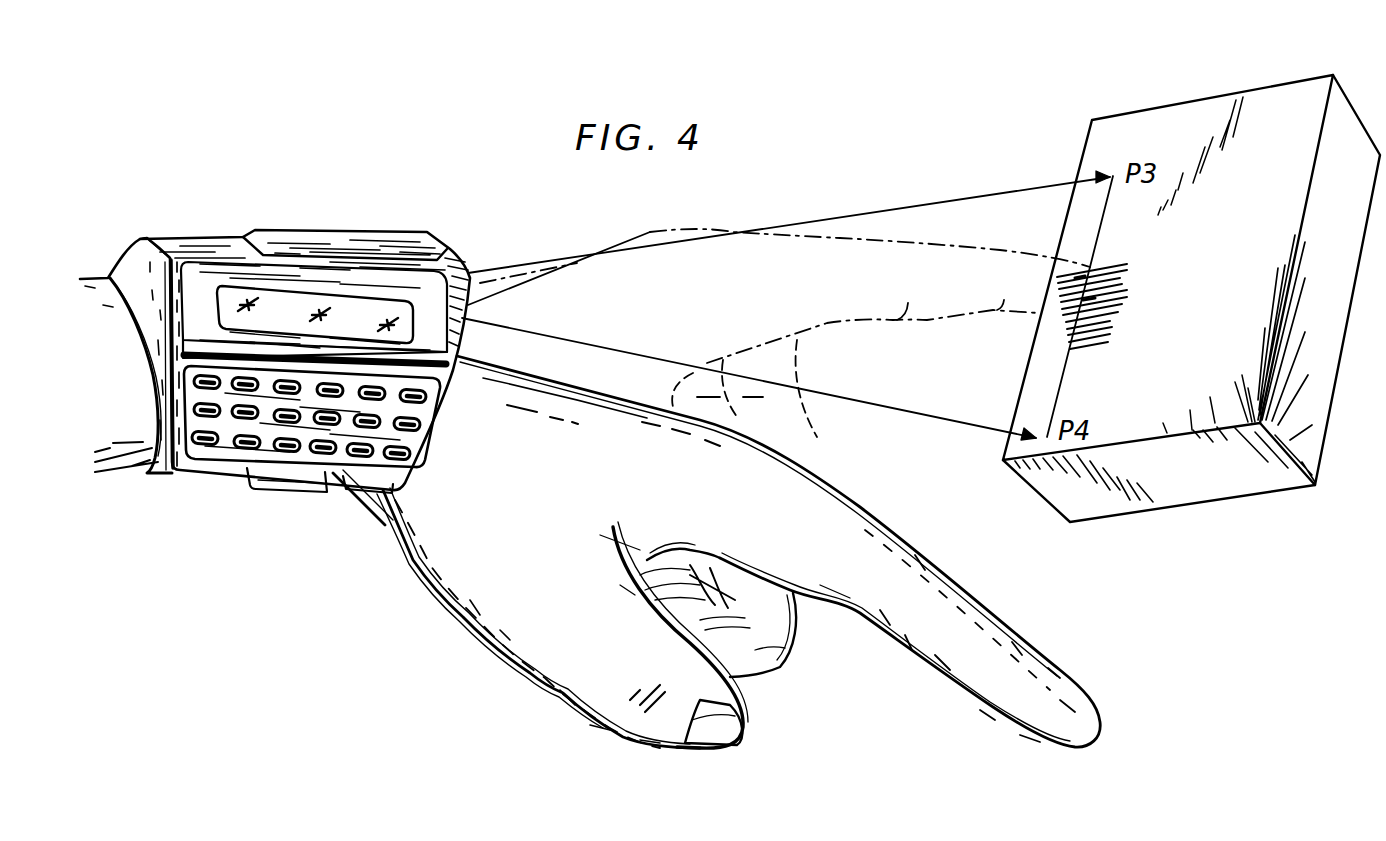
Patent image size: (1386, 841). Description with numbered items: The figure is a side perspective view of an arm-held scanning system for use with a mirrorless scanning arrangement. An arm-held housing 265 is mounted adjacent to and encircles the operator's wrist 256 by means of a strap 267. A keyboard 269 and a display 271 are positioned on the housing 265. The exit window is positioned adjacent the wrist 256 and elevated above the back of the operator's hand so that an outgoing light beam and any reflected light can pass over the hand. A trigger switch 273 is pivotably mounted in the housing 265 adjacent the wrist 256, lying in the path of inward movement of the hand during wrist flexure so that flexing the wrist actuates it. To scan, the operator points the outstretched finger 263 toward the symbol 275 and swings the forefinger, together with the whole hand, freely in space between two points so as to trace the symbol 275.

The wrist 256 is at (125, 462).
The outstretched finger 263 is at (1073, 688).
The arm-held housing 265 is at (212, 234).
The strap 267 is at (287, 491).
The keyboard 269 is at (410, 424).
The display 271 is at (350, 310).
The trigger switch 273 is at (363, 503).
The symbol 275 is at (1128, 252).